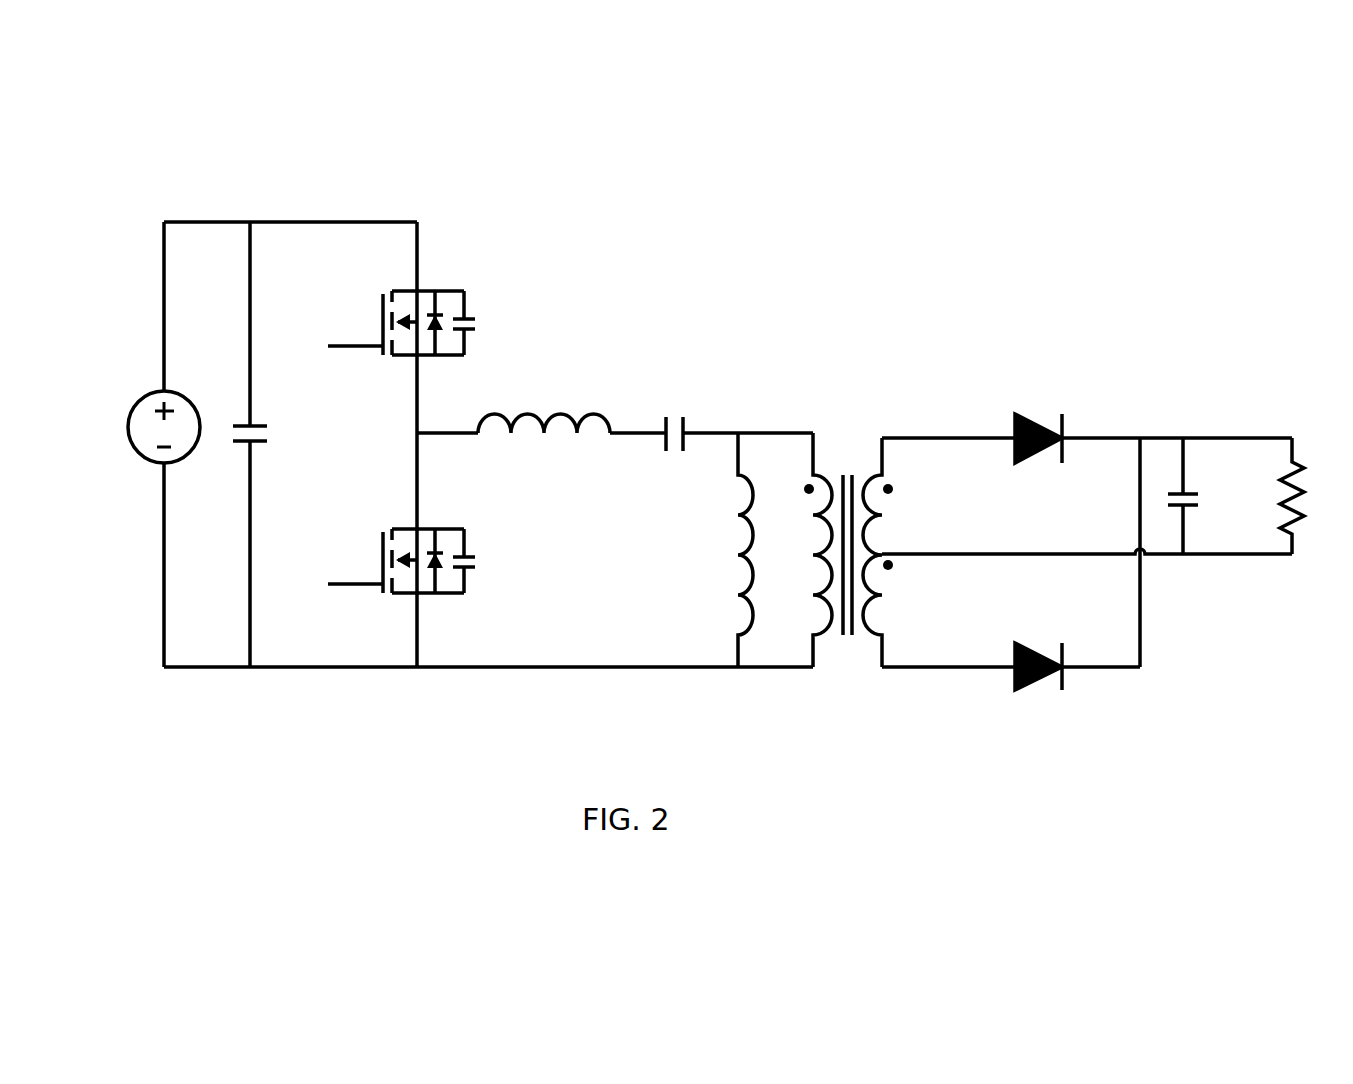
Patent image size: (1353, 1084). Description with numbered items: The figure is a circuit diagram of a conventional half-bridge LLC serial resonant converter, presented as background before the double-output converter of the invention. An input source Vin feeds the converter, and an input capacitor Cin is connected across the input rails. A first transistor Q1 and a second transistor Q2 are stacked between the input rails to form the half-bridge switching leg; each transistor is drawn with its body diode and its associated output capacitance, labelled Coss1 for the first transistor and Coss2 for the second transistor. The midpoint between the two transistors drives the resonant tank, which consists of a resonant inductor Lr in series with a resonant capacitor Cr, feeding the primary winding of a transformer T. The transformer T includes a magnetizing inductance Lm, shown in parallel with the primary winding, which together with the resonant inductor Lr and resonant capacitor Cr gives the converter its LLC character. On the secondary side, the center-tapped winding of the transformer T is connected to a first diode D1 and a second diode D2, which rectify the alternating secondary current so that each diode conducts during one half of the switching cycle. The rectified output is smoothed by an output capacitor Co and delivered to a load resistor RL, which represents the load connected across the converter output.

The input voltage source Vin is at (137, 427).
The input capacitor Cin is at (269, 444).
The first transistor Q1 is at (396, 336).
The second transistor Q2 is at (396, 575).
The output capacitance of first switch Coss1 is at (488, 323).
The output capacitance of second switch Coss2 is at (488, 561).
The resonant inductor Lr is at (544, 404).
The resonant capacitor Cr is at (674, 413).
The magnetizing inductance Lm is at (764, 550).
The transformer T is at (848, 561).
The first diode D1 is at (1038, 454).
The second diode D2 is at (1038, 680).
The output capacitor Co is at (1198, 496).
The load resistor RL is at (1307, 496).